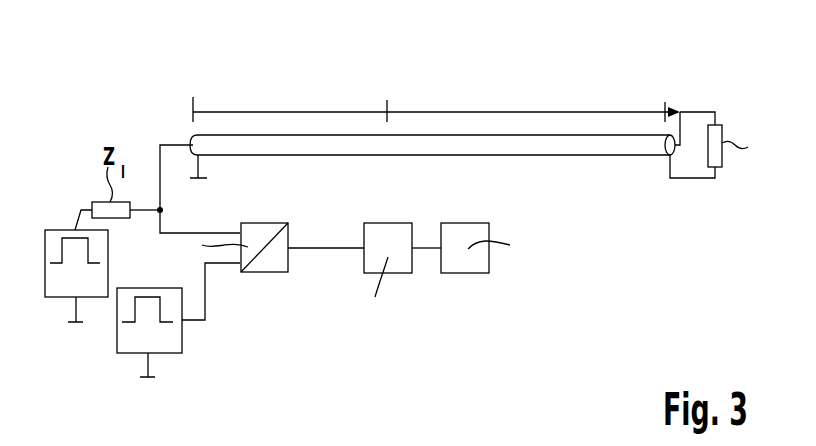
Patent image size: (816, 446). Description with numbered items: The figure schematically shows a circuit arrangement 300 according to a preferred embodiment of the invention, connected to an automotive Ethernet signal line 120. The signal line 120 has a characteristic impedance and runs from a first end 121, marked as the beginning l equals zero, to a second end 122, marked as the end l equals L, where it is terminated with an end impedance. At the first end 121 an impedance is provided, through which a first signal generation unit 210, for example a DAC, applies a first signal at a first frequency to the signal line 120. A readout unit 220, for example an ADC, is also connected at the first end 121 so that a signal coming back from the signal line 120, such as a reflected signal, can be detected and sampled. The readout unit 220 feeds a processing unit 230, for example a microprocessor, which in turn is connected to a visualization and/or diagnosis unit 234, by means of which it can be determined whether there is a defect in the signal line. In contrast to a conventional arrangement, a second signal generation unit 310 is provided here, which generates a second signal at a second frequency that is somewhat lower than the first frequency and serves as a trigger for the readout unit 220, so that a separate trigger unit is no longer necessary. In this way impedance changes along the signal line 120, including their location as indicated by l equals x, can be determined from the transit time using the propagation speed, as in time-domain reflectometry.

The circuit arrangement 300 is at (83, 107).
The automotive Ethernet signal line 120 is at (443, 135).
The first end 121 is at (185, 132).
The second end 122 is at (688, 97).
The signal generation unit 210 is at (62, 230).
The readout unit 220 is at (267, 223).
The processing unit 230 is at (387, 223).
The visualization and/or diagnosis unit 234 is at (463, 223).
The second signal generation unit 310 is at (182, 343).